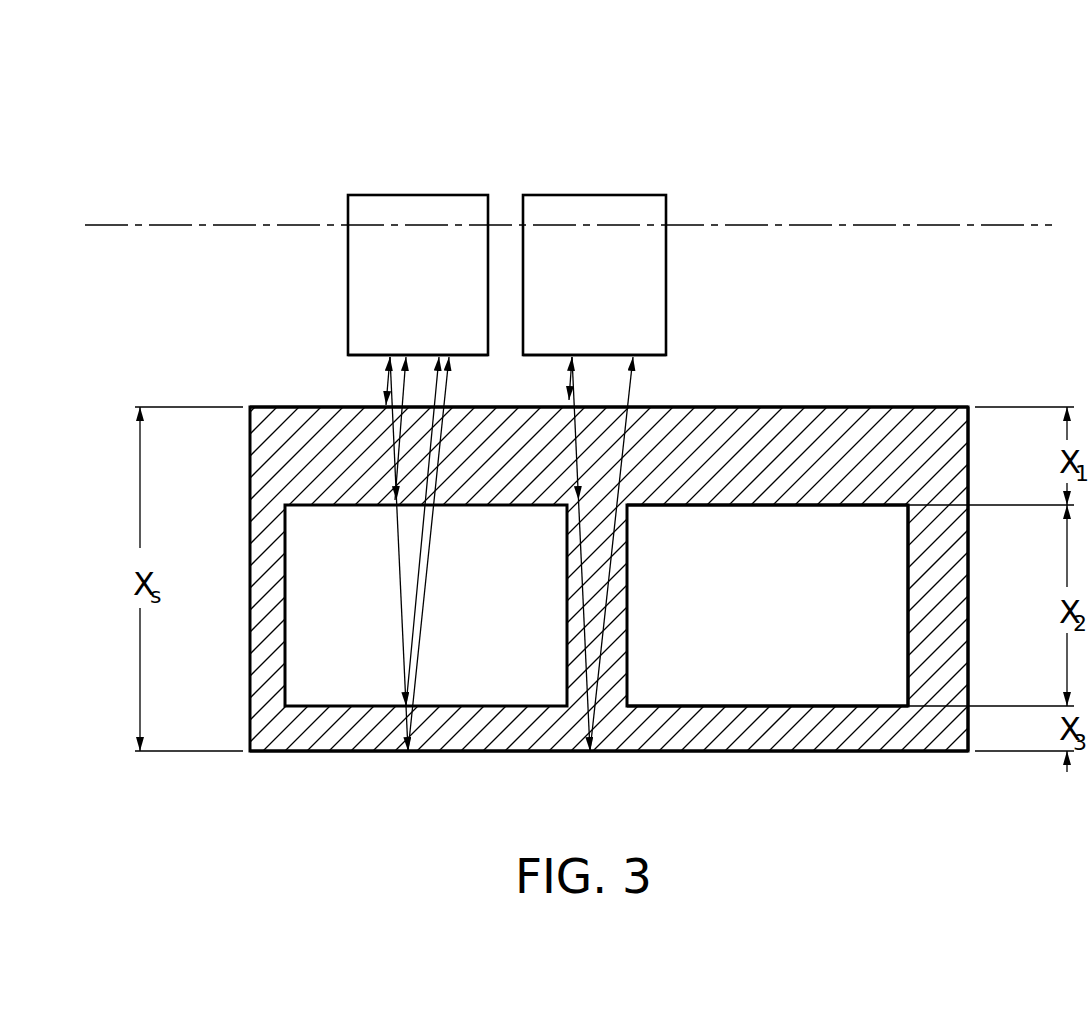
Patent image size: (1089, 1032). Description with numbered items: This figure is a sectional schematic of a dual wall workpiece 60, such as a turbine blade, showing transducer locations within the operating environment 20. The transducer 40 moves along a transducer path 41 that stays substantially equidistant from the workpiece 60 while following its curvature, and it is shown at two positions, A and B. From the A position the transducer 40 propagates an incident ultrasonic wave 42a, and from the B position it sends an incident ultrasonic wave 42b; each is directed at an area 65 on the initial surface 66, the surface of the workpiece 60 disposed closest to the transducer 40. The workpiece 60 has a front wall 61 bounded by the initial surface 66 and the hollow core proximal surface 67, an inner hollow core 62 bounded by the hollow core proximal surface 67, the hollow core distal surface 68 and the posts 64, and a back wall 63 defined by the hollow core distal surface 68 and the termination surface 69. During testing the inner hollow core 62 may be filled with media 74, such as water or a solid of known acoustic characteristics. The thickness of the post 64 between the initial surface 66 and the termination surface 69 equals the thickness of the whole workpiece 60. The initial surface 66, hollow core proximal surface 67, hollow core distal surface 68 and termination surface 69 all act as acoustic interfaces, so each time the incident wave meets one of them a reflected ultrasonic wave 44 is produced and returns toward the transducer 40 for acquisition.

The operating environment 20 is at (963, 120).
The transducer 40 is at (402, 264).
The transducer path 41 is at (857, 224).
The incident ultrasonic wave 42a is at (388, 366).
The incident ultrasonic wave 42b is at (572, 366).
The reflected ultrasonic wave 44 is at (394, 380).
The workpiece 60 is at (940, 460).
The front wall 61 is at (783, 444).
The inner hollow core 62 is at (847, 601).
The back wall 63 is at (783, 740).
The post 64 is at (937, 652).
The area on the initial surface 65 is at (388, 407).
The initial surface 66 is at (893, 406).
The hollow core proximal surface 67 is at (663, 508).
The hollow core distal surface 68 is at (760, 708).
The termination surface 69 is at (720, 752).
The media 74 is at (888, 587).